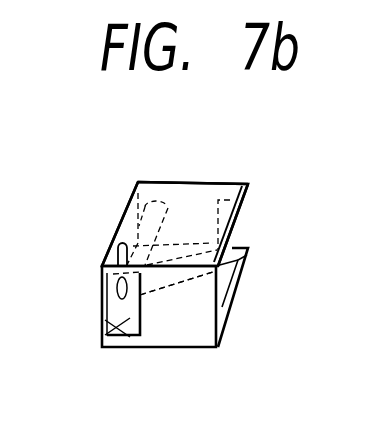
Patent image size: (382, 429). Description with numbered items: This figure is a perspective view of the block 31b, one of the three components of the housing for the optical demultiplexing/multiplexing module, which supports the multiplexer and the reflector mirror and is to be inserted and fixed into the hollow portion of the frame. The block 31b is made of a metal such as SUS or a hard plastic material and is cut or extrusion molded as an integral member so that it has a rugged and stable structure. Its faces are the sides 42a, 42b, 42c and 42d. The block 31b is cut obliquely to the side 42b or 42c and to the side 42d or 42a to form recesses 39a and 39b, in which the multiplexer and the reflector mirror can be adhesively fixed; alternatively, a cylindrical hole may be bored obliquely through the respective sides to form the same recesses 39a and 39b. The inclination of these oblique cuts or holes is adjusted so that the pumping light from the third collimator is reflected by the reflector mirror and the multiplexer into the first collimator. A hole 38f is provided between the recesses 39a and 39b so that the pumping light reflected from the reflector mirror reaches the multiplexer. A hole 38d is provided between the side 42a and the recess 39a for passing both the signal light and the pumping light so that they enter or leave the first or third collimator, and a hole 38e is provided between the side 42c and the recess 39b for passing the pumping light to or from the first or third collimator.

The block 31b is at (202, 202).
The side 42a is at (123, 212).
The side 42b is at (248, 193).
The side 42c is at (200, 183).
The side 42d is at (153, 337).
The hole 38d is at (117, 257).
The hole 38e is at (160, 203).
The hole 38f is at (167, 278).
The recess 39a is at (232, 248).
The recess 39b is at (102, 337).